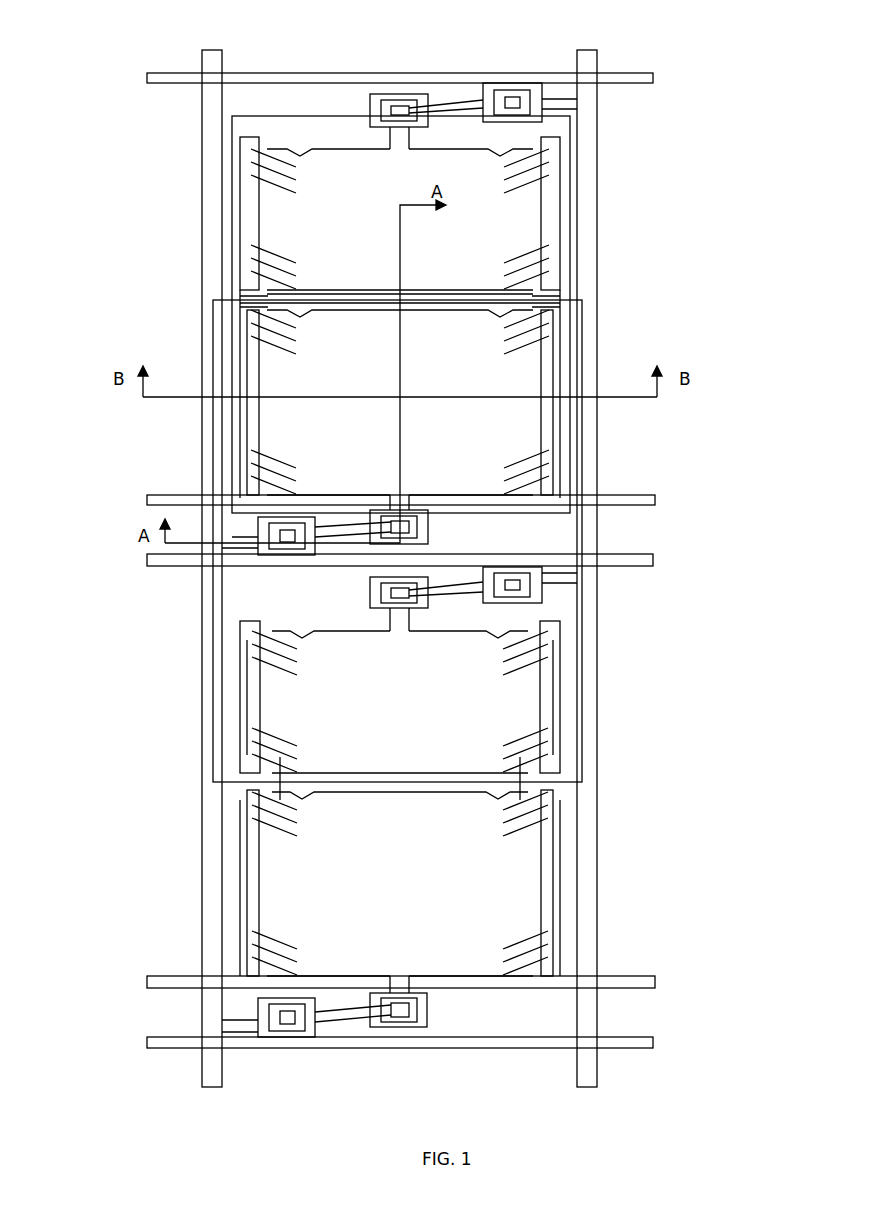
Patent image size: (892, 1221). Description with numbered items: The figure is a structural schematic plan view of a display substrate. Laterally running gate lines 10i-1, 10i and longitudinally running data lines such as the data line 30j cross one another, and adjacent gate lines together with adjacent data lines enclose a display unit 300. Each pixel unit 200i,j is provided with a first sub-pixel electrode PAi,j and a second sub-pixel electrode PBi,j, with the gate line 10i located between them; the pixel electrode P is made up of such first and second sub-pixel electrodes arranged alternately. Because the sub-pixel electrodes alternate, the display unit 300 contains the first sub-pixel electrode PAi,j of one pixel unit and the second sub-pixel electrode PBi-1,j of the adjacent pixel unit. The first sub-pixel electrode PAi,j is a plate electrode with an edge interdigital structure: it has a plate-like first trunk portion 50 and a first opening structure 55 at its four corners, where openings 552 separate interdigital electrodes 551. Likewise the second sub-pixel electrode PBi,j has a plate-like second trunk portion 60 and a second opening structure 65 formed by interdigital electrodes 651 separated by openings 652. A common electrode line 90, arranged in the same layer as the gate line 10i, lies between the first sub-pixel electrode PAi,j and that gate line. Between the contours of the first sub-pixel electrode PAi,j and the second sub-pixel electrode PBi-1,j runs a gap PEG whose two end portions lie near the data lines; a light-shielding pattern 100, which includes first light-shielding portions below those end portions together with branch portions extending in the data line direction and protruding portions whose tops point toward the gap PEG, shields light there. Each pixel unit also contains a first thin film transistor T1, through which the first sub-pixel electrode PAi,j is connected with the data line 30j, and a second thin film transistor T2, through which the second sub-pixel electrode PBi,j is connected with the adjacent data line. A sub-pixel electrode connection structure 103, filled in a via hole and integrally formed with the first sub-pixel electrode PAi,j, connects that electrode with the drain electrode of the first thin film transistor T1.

The data line 30j is at (212, 58).
The gate line 10i-1 is at (147, 78).
The gate line 10i is at (147, 560).
The common electrode line 90 is at (170, 498).
The display unit 300 is at (571, 152).
The pixel unit 200i,j is at (582, 742).
The first thin film transistor T1 is at (344, 532).
The second thin film transistor T2 is at (456, 587).
The second sub-pixel electrode PBi-1,j is at (252, 200).
The gap PEG is at (430, 294).
The light-shielding pattern 100 is at (400, 294).
The first sub-pixel electrode PAi,j is at (463, 410).
The first trunk portion 50 is at (491, 402).
The first opening structure 55 is at (620, 462).
The interdigital electrodes 551 is at (540, 462).
The openings 552 is at (540, 476).
The sub-pixel electrode connection structure 103 is at (392, 497).
The second sub-pixel electrode PBi,j is at (509, 697).
The second trunk portion 60 is at (481, 684).
The second opening structure 65 is at (612, 635).
The interdigital electrodes 651 is at (523, 650).
The openings 652 is at (523, 640).
The pixel electrode P is at (800, 400).